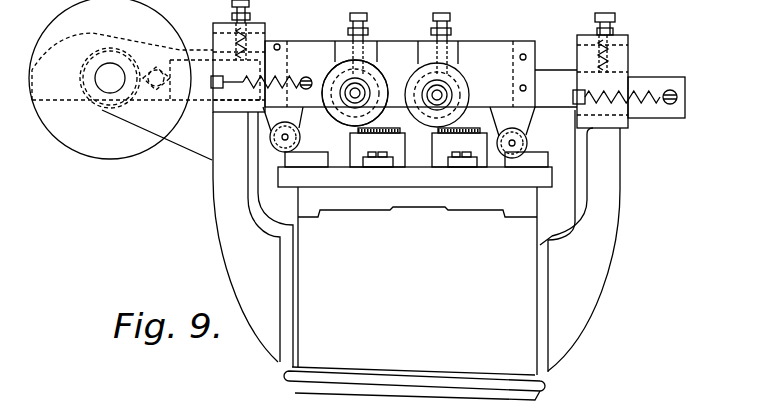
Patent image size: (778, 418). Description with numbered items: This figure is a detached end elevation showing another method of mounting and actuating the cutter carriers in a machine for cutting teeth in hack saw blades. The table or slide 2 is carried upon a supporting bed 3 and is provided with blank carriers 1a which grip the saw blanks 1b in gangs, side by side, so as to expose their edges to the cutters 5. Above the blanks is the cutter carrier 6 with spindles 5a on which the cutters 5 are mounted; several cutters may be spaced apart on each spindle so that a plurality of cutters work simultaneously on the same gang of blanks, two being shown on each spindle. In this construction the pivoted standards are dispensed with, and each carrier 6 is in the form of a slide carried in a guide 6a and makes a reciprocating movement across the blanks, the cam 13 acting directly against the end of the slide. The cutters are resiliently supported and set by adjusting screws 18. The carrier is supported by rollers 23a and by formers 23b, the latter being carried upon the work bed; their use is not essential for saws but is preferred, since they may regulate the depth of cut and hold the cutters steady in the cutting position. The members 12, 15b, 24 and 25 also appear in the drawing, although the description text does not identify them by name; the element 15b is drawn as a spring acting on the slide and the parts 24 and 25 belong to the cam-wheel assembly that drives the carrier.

The blank carrier 1a is at (360, 166).
The saw blank 1b is at (362, 133).
The table or slide 2 is at (390, 182).
The supporting bed 3 is at (416, 255).
The cutter 5 is at (378, 78).
The spindle 5a is at (350, 91).
The cutter carrier 6 is at (302, 48).
The guide 6a is at (242, 45).
The adjusting bolts 12 is at (230, 6).
The cam 13 is at (32, 100).
The tension springs 15b is at (255, 85).
The adjusting screw 18 is at (432, 17).
The roller 23a is at (283, 137).
The former 23b is at (282, 164).
The hub 24 is at (103, 84).
The wheel 25 is at (48, 92).